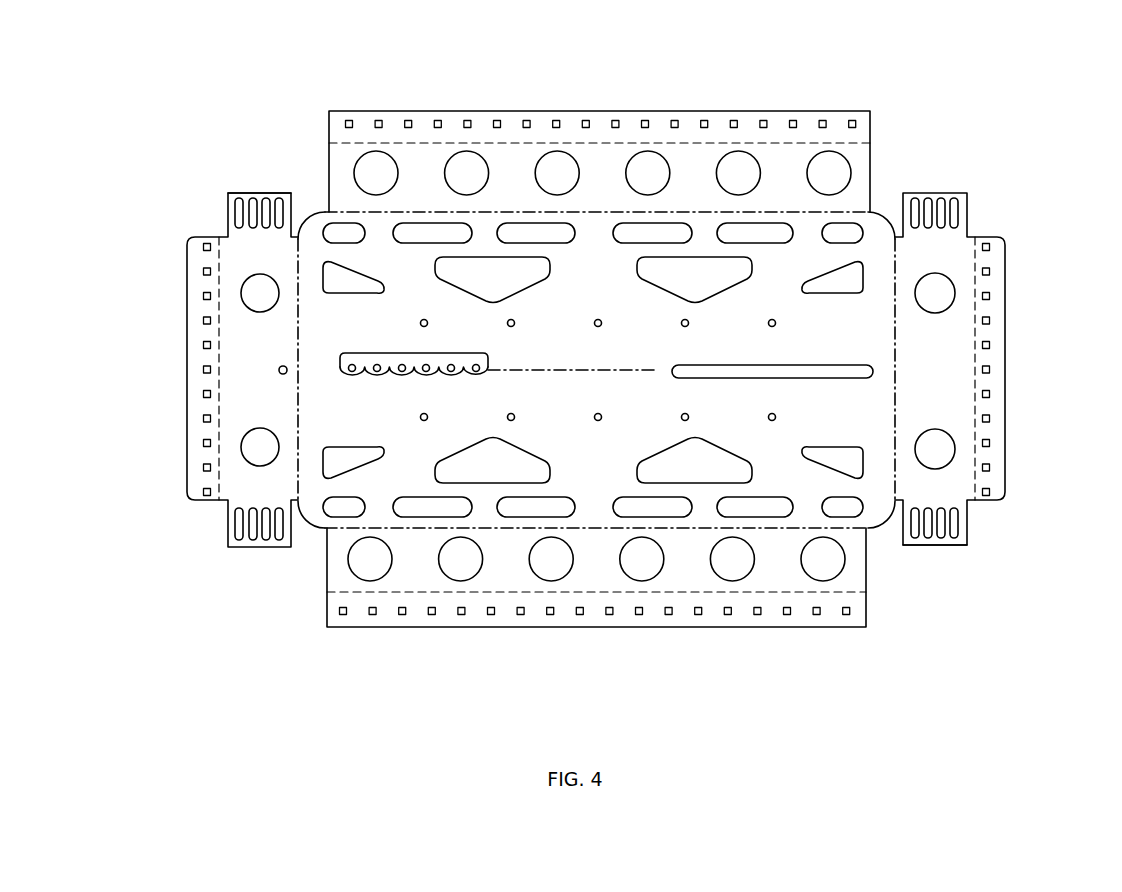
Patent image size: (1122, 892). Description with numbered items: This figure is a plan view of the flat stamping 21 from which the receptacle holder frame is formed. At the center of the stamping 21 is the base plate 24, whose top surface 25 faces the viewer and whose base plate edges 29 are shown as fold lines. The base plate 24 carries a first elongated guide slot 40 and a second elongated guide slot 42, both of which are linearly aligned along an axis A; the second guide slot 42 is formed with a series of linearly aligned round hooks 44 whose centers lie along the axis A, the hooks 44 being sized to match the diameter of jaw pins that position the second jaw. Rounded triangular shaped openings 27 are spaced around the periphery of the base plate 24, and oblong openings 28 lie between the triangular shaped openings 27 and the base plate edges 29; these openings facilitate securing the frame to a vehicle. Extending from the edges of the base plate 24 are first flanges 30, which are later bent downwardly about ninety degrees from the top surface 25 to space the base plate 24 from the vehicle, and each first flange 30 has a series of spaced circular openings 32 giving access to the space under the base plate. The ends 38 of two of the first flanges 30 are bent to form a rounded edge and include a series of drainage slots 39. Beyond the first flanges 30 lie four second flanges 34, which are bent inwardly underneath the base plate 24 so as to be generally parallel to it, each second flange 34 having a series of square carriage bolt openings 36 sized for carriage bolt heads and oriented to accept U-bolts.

The stamping 21 is at (884, 114).
The base plate 24 is at (388, 480).
The top surface 25 is at (537, 413).
The rounded triangular shaped openings 27 is at (438, 285).
The oblong openings 28 is at (566, 248).
The base plate edges 29 is at (296, 333).
The first flanges 30 is at (273, 257).
The circular openings 32 is at (640, 582).
The second flanges 34 is at (750, 122).
The carriage bolt openings 36 is at (472, 121).
The ends 38 is at (226, 215).
The drainage slots 39 is at (941, 197).
The first elongated guide slot 40 is at (810, 366).
The second elongated guide slot 42 is at (427, 353).
The round hooks 44 is at (368, 382).
The axis A is at (578, 367).